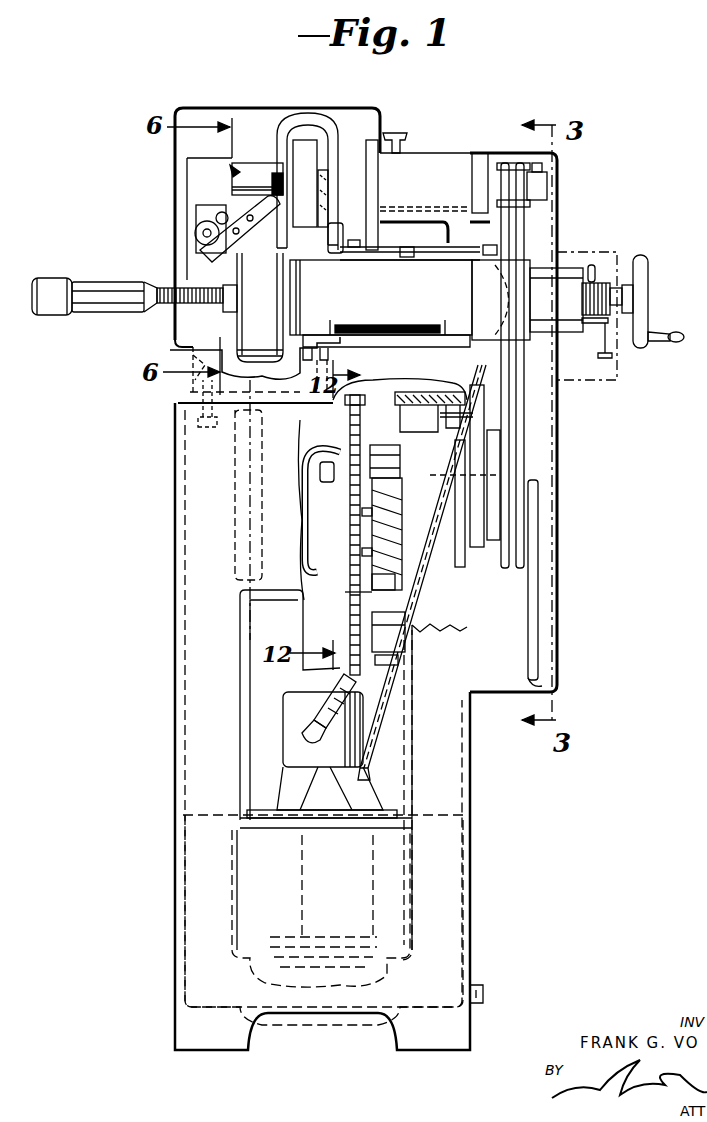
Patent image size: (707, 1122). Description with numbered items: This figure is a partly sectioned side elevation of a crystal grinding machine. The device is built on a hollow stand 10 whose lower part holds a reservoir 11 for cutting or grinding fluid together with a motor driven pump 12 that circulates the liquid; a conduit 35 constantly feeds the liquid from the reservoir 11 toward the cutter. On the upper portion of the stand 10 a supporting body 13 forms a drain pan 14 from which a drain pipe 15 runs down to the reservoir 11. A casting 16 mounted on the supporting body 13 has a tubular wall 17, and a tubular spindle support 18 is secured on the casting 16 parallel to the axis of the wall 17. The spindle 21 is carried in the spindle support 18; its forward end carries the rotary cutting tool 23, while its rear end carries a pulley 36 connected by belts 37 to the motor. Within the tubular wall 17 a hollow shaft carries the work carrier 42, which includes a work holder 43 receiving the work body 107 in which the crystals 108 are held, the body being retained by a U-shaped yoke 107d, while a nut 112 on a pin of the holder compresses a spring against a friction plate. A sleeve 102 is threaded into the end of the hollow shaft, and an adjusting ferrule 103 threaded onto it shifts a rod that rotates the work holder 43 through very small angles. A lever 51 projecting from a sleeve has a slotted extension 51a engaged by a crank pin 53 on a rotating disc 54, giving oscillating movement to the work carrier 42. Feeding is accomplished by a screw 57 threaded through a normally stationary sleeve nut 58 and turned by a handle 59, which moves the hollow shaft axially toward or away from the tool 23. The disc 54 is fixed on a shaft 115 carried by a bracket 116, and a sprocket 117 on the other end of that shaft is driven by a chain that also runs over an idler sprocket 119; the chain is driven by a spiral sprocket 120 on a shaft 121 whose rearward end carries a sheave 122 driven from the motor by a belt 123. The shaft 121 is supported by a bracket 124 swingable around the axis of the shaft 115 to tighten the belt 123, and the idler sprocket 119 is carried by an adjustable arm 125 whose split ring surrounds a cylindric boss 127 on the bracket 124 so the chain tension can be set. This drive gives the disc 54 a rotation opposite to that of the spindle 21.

The stand 10 is at (183, 590).
The reservoir 11 is at (400, 830).
The motor driven pump 12 is at (290, 780).
The supporting body 13 is at (180, 390).
The drain pan 14 is at (193, 363).
The drain pipe 15 is at (247, 647).
The casting 16 is at (425, 258).
The tubular wall 17 is at (394, 308).
The tubular spindle support 18 is at (421, 160).
The spindle 21 is at (327, 180).
The rotary cutting tool 23 is at (296, 145).
The conduit 35 is at (387, 708).
The pulley 36 is at (501, 178).
The belts 37 is at (524, 228).
The work carrier 42 is at (273, 339).
The work holder 43 is at (238, 171).
The lever 51 is at (474, 337).
The slotted extension 51a is at (490, 442).
The crank pin 53 is at (483, 500).
The rotating disc 54 is at (480, 485).
The screw 57 is at (592, 264).
The sleeve nut 58 is at (603, 285).
The handle 59 is at (648, 273).
The sleeve 102 is at (167, 287).
The adjusting ferrule 103 is at (98, 283).
The work body 107 is at (262, 173).
The U-shaped yoke 107d is at (238, 241).
The crystals 108 is at (273, 187).
The nut 112 is at (213, 220).
The shaft 115 is at (388, 462).
The bracket 116 is at (413, 467).
The sprocket 117 is at (350, 405).
The idler sprocket 119 is at (343, 668).
The spiral sprocket 120 is at (352, 590).
The shaft 121 is at (378, 632).
The sheave 122 is at (540, 578).
The belt 123 is at (536, 683).
The bracket 124 is at (434, 530).
The adjustable arm 125 is at (378, 660).
The cylindric boss 127 is at (355, 575).